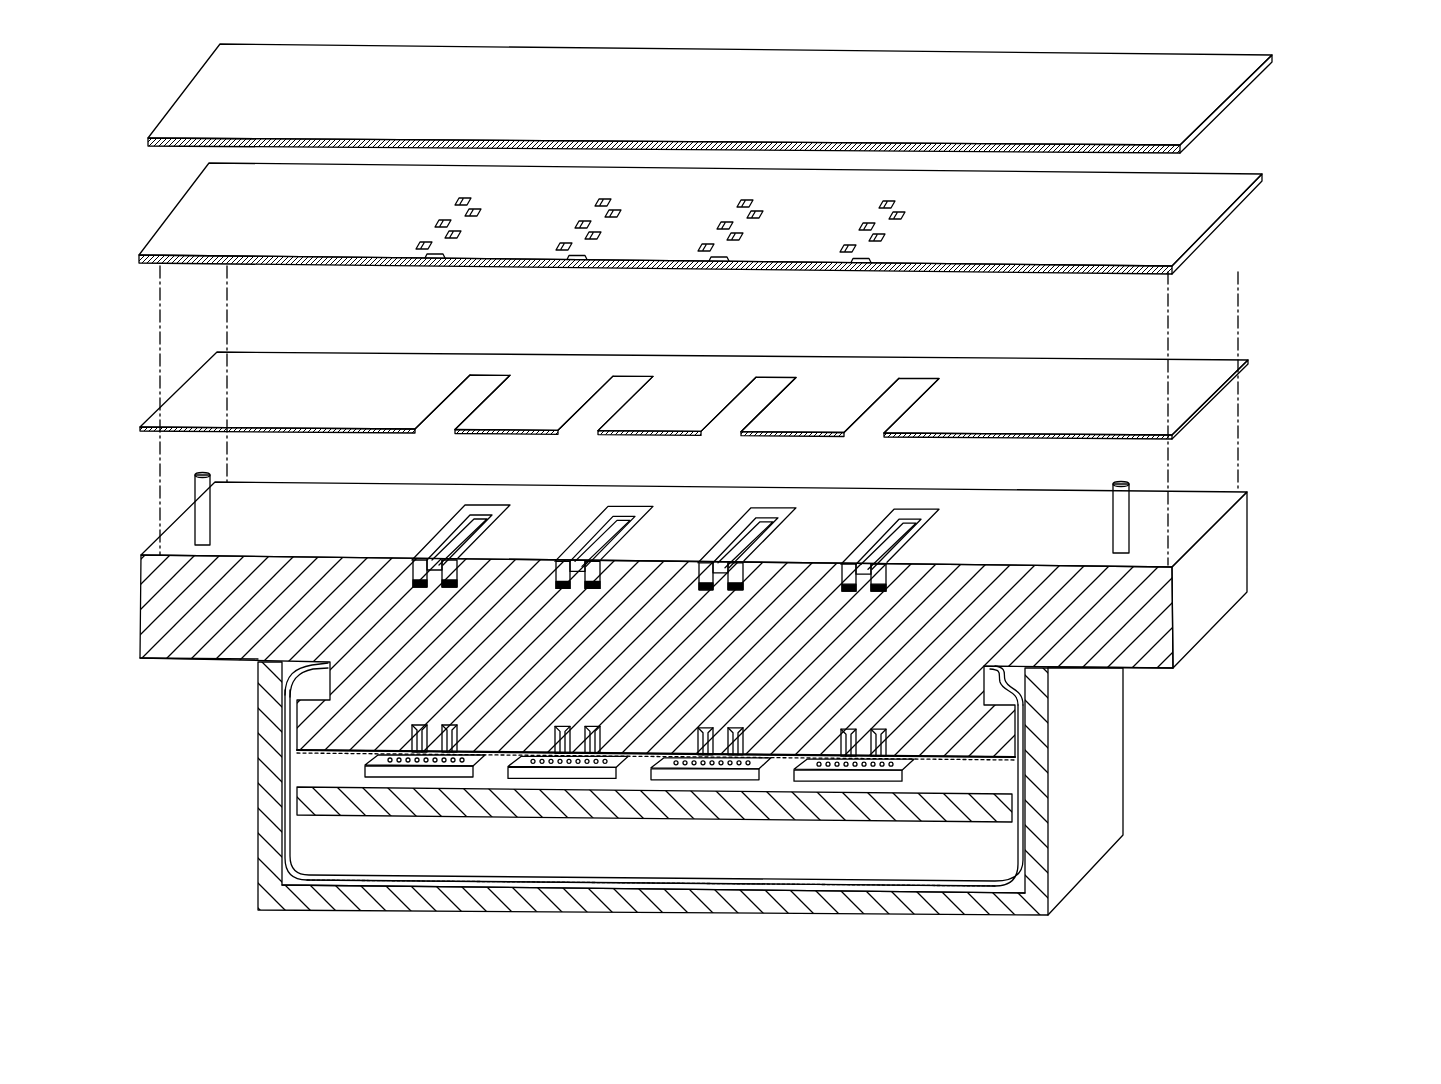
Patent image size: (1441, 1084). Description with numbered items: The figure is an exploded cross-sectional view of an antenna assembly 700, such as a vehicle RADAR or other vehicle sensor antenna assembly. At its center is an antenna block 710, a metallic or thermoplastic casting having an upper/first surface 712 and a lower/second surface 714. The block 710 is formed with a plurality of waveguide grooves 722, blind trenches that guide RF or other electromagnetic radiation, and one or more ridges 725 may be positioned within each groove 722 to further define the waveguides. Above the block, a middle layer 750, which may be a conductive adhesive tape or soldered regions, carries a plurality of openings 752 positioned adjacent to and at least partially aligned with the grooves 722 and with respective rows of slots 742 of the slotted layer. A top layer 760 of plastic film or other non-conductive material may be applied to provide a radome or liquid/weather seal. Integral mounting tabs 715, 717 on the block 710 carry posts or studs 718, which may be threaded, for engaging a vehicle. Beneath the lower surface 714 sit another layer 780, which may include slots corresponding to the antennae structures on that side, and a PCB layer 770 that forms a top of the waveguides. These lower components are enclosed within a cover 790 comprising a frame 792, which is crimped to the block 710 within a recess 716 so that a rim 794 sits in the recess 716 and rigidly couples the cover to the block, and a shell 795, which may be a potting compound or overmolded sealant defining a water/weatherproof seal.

The antenna assembly 700 is at (1322, 152).
The antenna block 710 is at (710, 604).
The upper/first surface 712 is at (310, 495).
The lower/second surface 714 is at (287, 763).
The mounting tab 715 is at (1140, 650).
The recess 716 is at (307, 690).
The mounting tab 717 is at (160, 650).
The post or stud 718 is at (200, 492).
The waveguide groove 722 is at (458, 518).
The ridge 725 is at (475, 520).
The slot 742 is at (425, 226).
The middle layer 750 is at (736, 376).
The opening 752 is at (478, 388).
The top layer 760 is at (1185, 120).
The PCB layer 770 is at (557, 810).
The layer 780 is at (980, 763).
The cover 790 is at (700, 809).
The frame 792 is at (967, 885).
The rim 794 is at (1008, 680).
The shell 795 is at (720, 905).